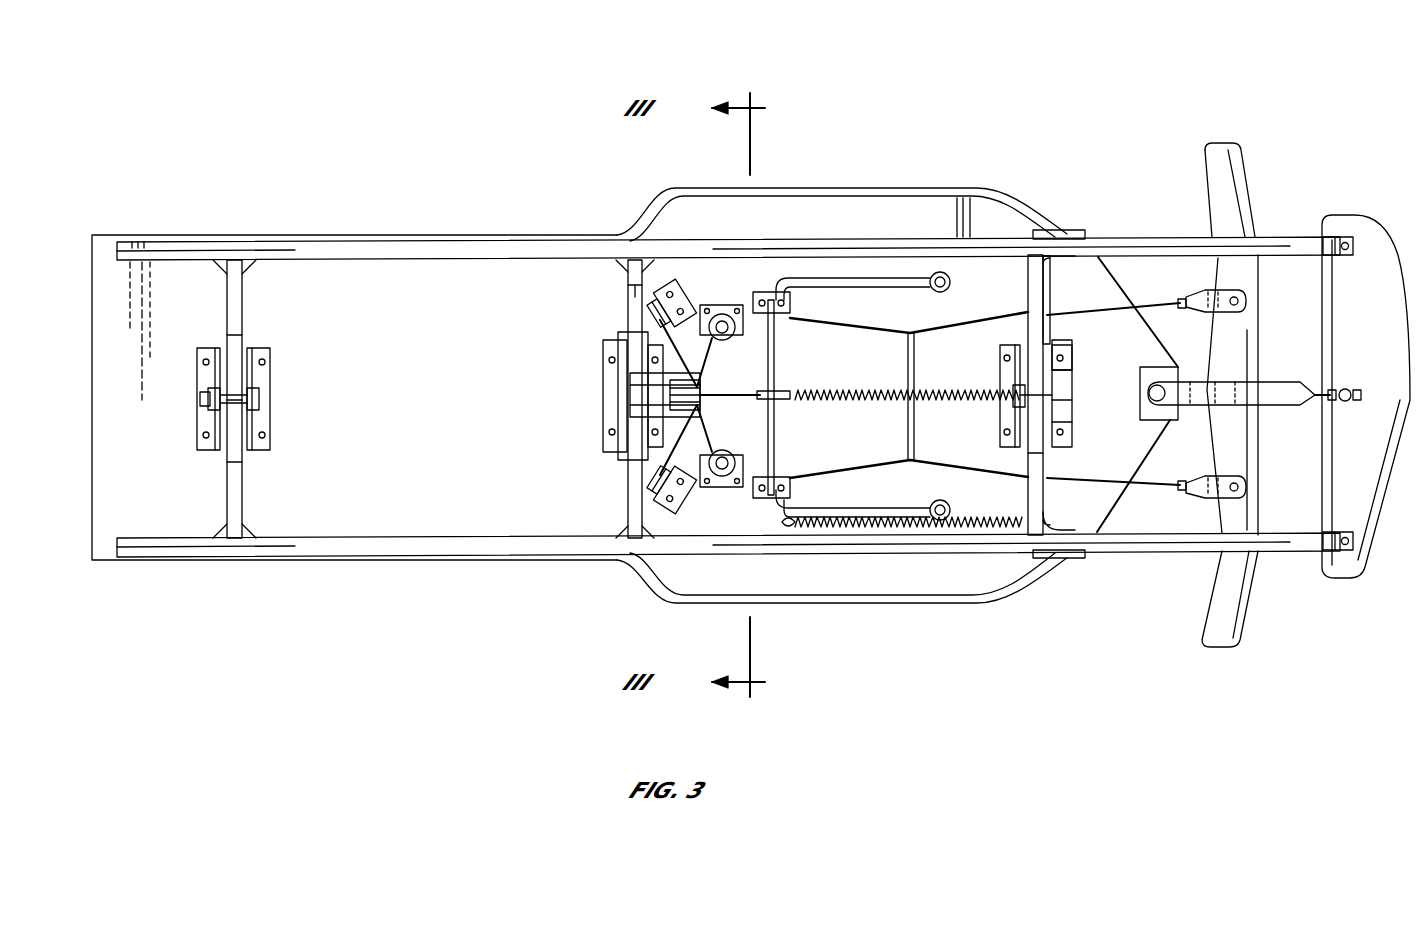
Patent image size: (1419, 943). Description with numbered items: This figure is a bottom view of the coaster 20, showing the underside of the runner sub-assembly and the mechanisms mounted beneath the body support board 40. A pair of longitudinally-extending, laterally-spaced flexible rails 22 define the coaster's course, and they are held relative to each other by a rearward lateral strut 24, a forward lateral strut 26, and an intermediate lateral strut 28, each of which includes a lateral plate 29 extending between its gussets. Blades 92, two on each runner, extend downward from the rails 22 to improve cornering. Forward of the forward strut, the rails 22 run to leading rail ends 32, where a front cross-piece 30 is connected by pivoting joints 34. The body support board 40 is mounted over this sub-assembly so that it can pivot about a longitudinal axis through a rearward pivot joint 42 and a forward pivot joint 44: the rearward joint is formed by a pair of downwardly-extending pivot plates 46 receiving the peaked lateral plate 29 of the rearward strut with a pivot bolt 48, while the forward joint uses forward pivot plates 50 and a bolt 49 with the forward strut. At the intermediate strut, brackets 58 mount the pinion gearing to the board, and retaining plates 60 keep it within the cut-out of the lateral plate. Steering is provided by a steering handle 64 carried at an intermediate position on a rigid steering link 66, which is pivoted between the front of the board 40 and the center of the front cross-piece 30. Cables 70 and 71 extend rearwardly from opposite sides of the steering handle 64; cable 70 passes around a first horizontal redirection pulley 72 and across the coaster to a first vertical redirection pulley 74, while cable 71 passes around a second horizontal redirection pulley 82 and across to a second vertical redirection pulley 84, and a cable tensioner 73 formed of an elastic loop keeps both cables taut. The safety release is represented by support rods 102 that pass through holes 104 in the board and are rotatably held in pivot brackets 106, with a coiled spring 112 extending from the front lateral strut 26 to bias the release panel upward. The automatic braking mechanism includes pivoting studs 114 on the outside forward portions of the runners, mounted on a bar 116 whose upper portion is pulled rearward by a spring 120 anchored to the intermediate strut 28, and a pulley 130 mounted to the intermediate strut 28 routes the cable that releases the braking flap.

The coaster 20 is at (968, 108).
The flexible rails 22 is at (372, 258).
The rearward lateral strut 24 is at (250, 303).
The forward lateral strut 26 is at (1018, 318).
The intermediate lateral strut 28 is at (618, 295).
The lateral plate 29 is at (232, 496).
The front cross-piece 30 is at (1385, 447).
The leading rail ends 32 is at (1290, 240).
The pivoting joints 34 is at (1345, 240).
The body support board 40 is at (425, 465).
The rearward pivot joint 42 is at (272, 401).
The forward pivot joint 44 is at (1080, 346).
The pivot plates 46 is at (217, 377).
The pivot shaft or bolt 48 is at (210, 399).
The pivot shaft or bolt 49 is at (1012, 390).
The forward pivot plates 50 is at (1000, 422).
The brackets 58 is at (630, 416).
The retaining plates 60 is at (623, 342).
The steering handle 64 is at (1230, 587).
The rigid steering link 66 is at (1275, 395).
The cable 70 is at (1148, 308).
The cable 71 is at (1143, 483).
The first horizontal redirection pulley 72 is at (718, 340).
The cable tensioner 73 is at (905, 340).
The first vertical redirection pulley 74 is at (675, 505).
The second horizontal redirection pulley 82 is at (718, 452).
The second vertical redirection pulley 84 is at (678, 290).
The blades 92 is at (200, 250).
The support rods 102 is at (830, 283).
The holes 104 is at (937, 272).
The pivot brackets 106 is at (770, 300).
The coiled spring 112 is at (885, 401).
The pivoting studs 114 is at (1077, 230).
The bar 116 is at (1060, 334).
The spring 120 is at (850, 528).
The pulley 130 is at (668, 395).